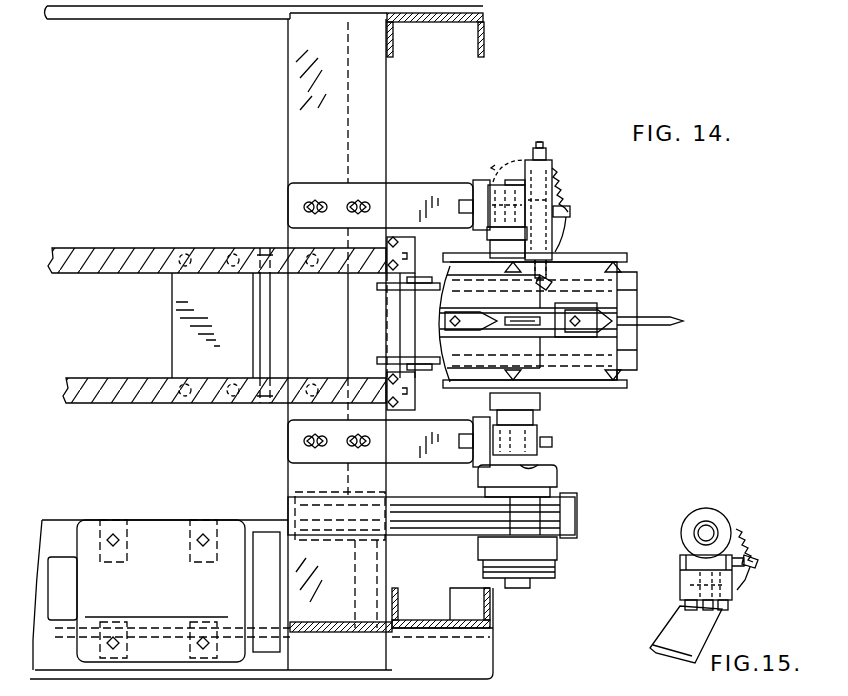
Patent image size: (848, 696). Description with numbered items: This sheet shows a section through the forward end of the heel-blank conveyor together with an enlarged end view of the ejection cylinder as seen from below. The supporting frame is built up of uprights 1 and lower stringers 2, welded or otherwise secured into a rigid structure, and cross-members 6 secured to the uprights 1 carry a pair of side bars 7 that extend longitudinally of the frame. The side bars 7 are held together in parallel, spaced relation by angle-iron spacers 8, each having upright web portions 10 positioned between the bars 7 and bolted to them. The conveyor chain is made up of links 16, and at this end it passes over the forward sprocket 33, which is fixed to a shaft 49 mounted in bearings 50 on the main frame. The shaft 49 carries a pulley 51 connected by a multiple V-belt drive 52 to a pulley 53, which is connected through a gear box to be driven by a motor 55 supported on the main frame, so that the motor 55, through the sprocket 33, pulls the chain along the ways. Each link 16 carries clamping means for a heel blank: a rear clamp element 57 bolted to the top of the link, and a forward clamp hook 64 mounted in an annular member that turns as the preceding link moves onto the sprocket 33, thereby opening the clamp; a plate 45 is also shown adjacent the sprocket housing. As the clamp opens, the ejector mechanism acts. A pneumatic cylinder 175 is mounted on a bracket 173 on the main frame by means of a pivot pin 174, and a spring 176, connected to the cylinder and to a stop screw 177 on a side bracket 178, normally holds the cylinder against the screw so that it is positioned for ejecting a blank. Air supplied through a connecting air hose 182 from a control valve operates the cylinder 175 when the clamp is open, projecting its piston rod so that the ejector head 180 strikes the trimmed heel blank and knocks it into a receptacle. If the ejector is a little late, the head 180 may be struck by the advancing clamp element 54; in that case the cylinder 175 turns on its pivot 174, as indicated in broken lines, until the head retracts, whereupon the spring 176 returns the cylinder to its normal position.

In FIG. 14, the uprights 1 is at (485, 38).
In FIG. 14, the lower stringers 2 is at (152, 20).
In FIG. 14, the cross-members 6 is at (286, 150).
In FIG. 14, the side bars 7 is at (112, 250).
In FIG. 14, the angle-iron spacers 8 is at (170, 328).
In FIG. 14, the upright web portions 10 is at (272, 341).
In FIG. 14, the link 16 is at (630, 298).
In FIG. 14, the forward sprocket 33 is at (441, 360).
In FIG. 14, the plate 45 is at (628, 258).
In FIG. 14, the shaft 49 is at (548, 466).
In FIG. 14, the bearings 50 is at (492, 186).
In FIG. 14, the pulley 51 is at (577, 495).
In FIG. 14, the multiple V-belt drive 52 is at (398, 527).
In FIG. 14, the pulley 53 is at (318, 494).
In FIG. 14, the clamp element 54 is at (378, 584).
In FIG. 14, the motor 55 is at (157, 529).
In FIG. 14, the rear clamp element 57 is at (472, 299).
In FIG. 14, the clamp hook 64 is at (535, 314).
In FIG. 15, the bracket 173 is at (670, 652).
In FIG. 14, the pivot pin 174 is at (556, 244).
In FIG. 15, the pivot pin 174 is at (690, 583).
In FIG. 14, the pneumatic cylinder 175 is at (522, 165).
In FIG. 15, the pneumatic cylinder 175 is at (712, 514).
In FIG. 14, the spring 176 is at (566, 196).
In FIG. 15, the spring 176 is at (752, 546).
In FIG. 14, the stop screw 177 is at (575, 214).
In FIG. 15, the stop screw 177 is at (760, 564).
In FIG. 14, the side bracket 178 is at (566, 234).
In FIG. 15, the side bracket 178 is at (751, 581).
In FIG. 14, the ejector head 180 is at (548, 278).
In FIG. 15, the ejector head 180 is at (694, 536).
In FIG. 14, the air hose 182 is at (541, 148).